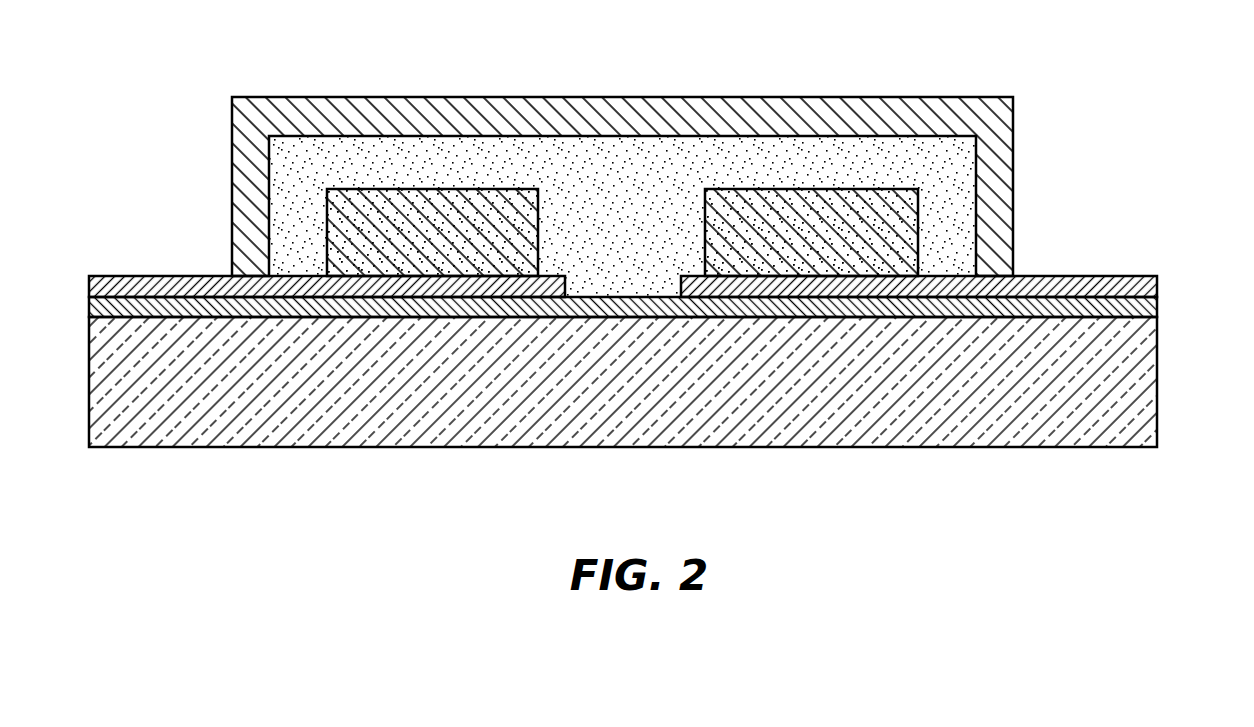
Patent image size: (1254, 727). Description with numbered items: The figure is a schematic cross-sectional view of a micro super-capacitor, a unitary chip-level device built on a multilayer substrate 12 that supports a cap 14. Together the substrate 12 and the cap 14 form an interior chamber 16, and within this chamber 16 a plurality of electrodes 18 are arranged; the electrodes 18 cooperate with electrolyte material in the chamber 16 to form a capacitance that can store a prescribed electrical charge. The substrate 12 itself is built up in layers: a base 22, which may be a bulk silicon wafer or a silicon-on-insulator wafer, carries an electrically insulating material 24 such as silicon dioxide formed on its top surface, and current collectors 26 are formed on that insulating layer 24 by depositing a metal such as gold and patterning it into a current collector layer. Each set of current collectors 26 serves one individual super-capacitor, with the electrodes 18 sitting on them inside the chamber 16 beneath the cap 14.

The multilayer substrate 12 is at (663, 278).
The cap 14 is at (635, 117).
The interior chamber 16 is at (320, 165).
The electrodes 18 is at (355, 221).
The base 22 is at (1105, 433).
The electrically insulating material 24 is at (1157, 310).
The current collectors 26 is at (1157, 286).